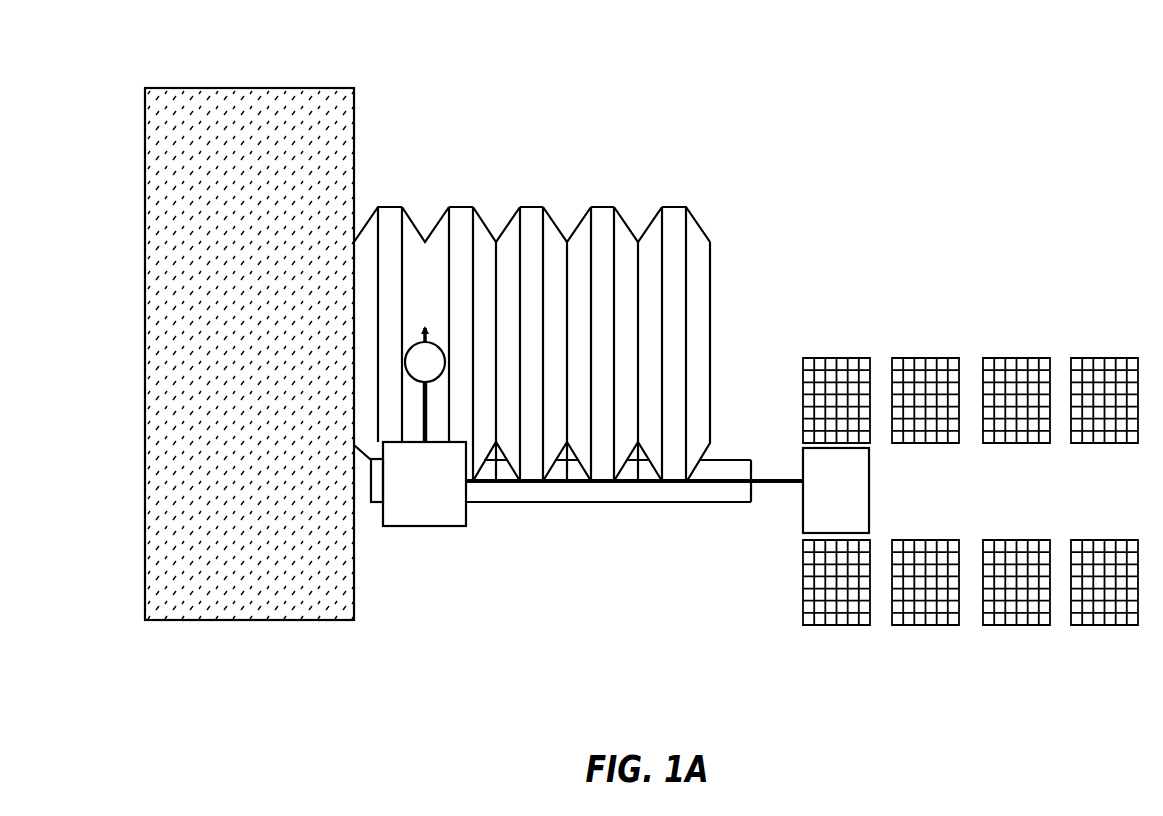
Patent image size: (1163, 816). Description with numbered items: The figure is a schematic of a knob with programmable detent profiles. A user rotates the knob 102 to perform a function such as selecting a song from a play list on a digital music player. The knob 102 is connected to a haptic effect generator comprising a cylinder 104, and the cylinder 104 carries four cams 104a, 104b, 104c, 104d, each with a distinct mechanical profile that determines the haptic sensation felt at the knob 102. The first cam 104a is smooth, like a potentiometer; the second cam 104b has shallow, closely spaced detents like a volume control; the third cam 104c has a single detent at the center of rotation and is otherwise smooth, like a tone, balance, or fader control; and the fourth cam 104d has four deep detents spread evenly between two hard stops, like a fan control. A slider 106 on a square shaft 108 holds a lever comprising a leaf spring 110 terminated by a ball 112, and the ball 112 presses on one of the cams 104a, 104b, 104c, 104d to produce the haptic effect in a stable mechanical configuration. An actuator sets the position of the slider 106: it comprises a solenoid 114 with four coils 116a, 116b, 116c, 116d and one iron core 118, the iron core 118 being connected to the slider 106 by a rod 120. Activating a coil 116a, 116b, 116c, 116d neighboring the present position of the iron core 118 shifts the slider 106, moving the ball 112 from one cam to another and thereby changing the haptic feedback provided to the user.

The knob 102 is at (246, 88).
The cylinder 104 is at (566, 302).
The first cam 104a is at (425, 242).
The second cam 104b is at (496, 242).
The third cam 104c is at (567, 242).
The fourth cam 104d is at (638, 242).
The slider 106 is at (430, 527).
The square shaft 108 is at (602, 503).
The leaf spring 110 is at (427, 412).
The ball 112 is at (445, 362).
The solenoid 114 is at (981, 427).
The first coil 116a is at (840, 623).
The second coil 116b is at (928, 623).
The third coil 116c is at (1017, 623).
The fourth coil 116d is at (1107, 623).
The iron core 118 is at (803, 515).
The rod 120 is at (783, 481).